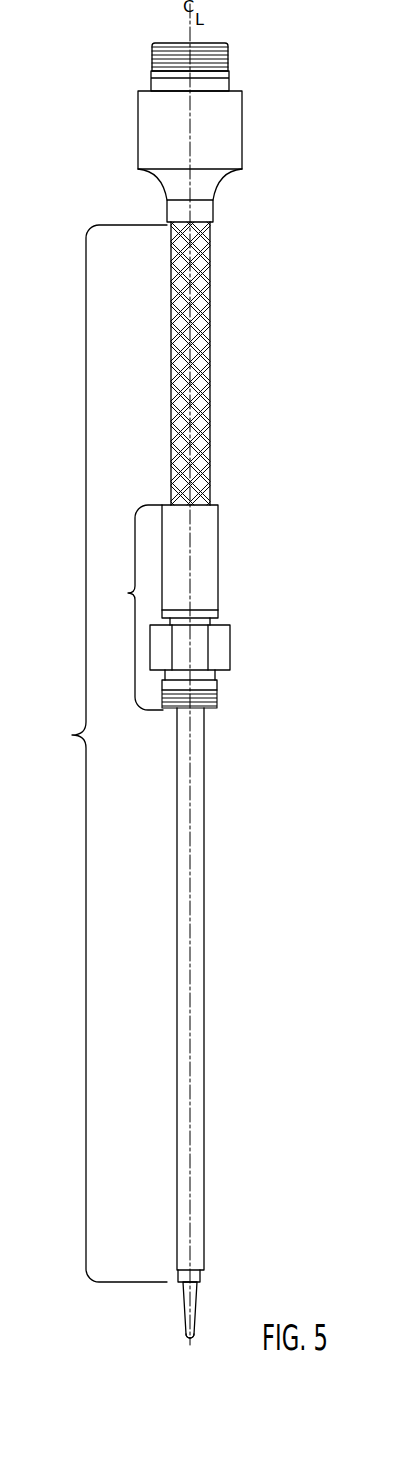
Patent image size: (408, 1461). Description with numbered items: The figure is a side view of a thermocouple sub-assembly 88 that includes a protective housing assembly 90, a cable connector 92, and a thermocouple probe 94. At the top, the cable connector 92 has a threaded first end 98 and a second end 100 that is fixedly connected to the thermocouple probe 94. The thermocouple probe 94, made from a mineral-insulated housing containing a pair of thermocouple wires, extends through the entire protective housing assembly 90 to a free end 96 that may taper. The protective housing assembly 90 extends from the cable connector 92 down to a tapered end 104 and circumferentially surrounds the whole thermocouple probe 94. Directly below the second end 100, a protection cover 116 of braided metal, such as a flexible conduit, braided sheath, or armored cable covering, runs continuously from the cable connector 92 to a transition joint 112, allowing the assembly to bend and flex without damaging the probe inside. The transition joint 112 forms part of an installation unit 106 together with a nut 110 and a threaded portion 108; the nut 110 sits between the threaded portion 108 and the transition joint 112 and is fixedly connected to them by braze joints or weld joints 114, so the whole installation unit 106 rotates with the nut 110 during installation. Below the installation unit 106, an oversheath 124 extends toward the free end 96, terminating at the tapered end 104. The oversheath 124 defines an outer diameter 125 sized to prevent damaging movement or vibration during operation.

The thermocouple sub-assembly 88 is at (116, 72).
The protective housing assembly 90 is at (72, 735).
The cable connector 92 is at (242, 150).
The thermocouple probe 94 is at (183, 1327).
The free end 96 is at (197, 1333).
The threaded first end 98 is at (229, 54).
The second end 100 is at (213, 208).
The tapered end 104 is at (206, 1276).
The installation unit 106 is at (127, 607).
The threaded portion 108 is at (217, 690).
The nut 110 is at (203, 633).
The transition joint 112 is at (215, 552).
The braze joints or weld joints 114 is at (218, 626).
The protection cover 116 is at (210, 370).
The oversheath 124 is at (204, 1000).
The outer diameter 125 is at (153, 830).